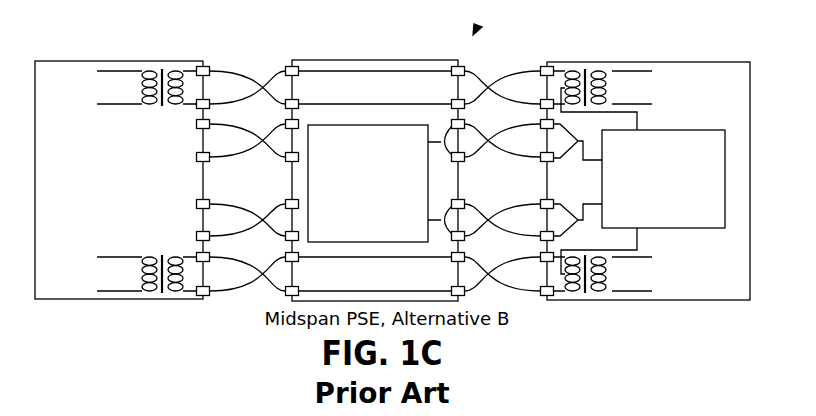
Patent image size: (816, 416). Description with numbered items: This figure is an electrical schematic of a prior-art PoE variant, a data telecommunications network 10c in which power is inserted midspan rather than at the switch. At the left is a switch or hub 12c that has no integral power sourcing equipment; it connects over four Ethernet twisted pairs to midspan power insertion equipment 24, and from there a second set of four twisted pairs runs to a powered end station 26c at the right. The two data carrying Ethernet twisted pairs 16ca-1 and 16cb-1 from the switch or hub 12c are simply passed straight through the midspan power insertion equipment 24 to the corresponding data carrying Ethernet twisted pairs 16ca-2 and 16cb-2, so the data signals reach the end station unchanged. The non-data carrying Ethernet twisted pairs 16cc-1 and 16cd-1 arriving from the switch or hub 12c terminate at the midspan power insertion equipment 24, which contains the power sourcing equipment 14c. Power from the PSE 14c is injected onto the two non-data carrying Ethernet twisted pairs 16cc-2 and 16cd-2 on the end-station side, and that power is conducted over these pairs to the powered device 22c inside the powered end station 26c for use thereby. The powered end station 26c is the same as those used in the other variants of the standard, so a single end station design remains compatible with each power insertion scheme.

The data telecommunications network 10c is at (478, 24).
The switch or hub 12c is at (176, 61).
The power sourcing equipment (PSE) 14c is at (318, 125).
The data carrying Ethernet twisted pair 16ca-1 is at (238, 67).
The data carrying Ethernet twisted pair 16ca-2 is at (518, 68).
The data carrying Ethernet twisted pair 16cb-1 is at (198, 254).
The data carrying Ethernet twisted pair 16cb-2 is at (465, 266).
The non-data carrying Ethernet twisted pair 16cc-1 is at (198, 122).
The non-data carrying Ethernet twisted pair 16cc-2 is at (465, 137).
The non-data carrying Ethernet twisted pair 16cd-1 is at (198, 202).
The non-data carrying Ethernet twisted pair 16cd-2 is at (465, 207).
The powered device (PD) 22c is at (693, 130).
The midspan power insertion equipment 24 is at (394, 157).
The powered end station 26c is at (646, 185).